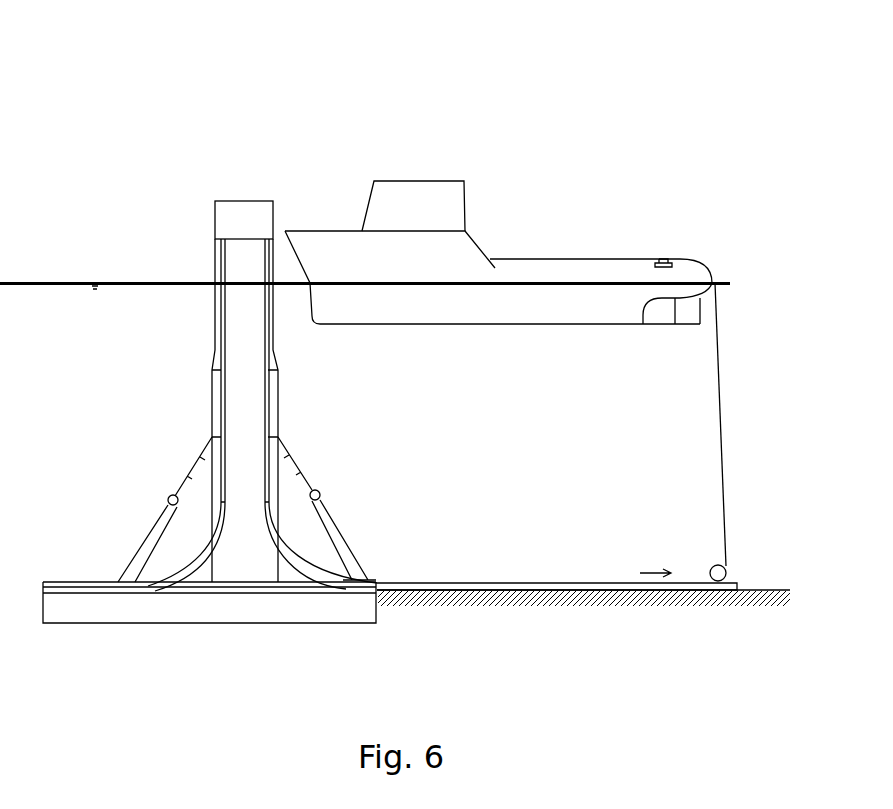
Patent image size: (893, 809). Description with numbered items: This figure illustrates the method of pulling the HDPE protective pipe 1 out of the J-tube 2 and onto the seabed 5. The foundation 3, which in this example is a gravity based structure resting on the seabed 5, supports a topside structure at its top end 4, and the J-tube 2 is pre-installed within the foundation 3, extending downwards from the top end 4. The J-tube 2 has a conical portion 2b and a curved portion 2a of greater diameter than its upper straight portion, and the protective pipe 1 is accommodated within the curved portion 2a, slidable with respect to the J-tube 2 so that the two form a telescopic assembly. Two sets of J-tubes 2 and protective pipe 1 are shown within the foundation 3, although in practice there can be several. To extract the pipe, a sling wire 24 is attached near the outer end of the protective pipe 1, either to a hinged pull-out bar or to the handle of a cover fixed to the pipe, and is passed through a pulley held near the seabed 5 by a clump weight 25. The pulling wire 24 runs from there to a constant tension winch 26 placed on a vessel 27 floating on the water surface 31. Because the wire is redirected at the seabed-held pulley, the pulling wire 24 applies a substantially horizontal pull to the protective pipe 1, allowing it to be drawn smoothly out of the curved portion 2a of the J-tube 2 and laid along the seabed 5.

The protective pipe 1 is at (355, 570).
The J-tube 2 is at (268, 403).
The curved portion 2a is at (293, 552).
The conical portion 2b is at (263, 498).
The foundation 3 is at (188, 468).
The top end 4 is at (245, 187).
The seabed 5 is at (522, 600).
The sling wire 24 is at (572, 583).
The clump weight 25 is at (715, 585).
The constant tension winch 26 is at (661, 259).
The vessel 27 is at (415, 181).
The water surface 31 is at (95, 283).